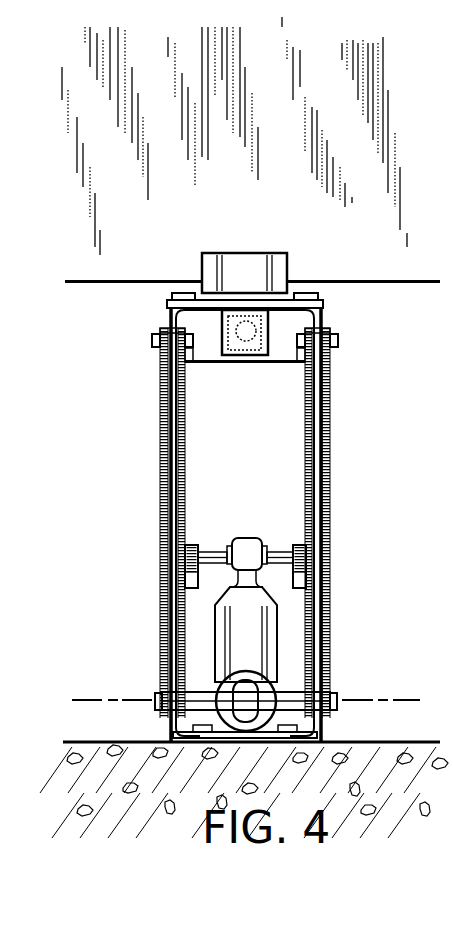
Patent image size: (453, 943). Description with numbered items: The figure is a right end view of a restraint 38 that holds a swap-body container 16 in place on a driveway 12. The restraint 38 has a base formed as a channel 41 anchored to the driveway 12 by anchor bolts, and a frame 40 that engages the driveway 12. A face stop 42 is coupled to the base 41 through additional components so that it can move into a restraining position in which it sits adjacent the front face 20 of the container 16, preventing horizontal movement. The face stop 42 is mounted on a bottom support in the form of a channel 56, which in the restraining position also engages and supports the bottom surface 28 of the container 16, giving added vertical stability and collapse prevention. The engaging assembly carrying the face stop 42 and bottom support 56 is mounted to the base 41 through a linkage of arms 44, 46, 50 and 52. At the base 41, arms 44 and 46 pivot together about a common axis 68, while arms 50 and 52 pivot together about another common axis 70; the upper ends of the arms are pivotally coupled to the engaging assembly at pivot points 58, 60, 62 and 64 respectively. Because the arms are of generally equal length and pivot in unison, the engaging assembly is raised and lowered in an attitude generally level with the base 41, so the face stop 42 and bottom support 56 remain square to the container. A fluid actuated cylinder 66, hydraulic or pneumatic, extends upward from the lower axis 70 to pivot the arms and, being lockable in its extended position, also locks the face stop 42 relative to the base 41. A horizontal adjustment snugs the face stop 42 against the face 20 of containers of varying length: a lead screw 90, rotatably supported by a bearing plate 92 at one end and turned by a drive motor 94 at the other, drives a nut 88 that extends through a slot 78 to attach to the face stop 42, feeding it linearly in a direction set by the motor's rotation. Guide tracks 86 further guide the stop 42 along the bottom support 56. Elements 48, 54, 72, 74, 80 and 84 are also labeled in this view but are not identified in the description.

The driveway 12 is at (139, 740).
The container 16 is at (385, 283).
The face 20 is at (264, 216).
The bottom surface 28 is at (94, 284).
The restraint 38 is at (96, 498).
The frame 40 is at (166, 585).
The channel 41 is at (322, 731).
The face stop 42 is at (255, 253).
The arm 44 is at (180, 410).
The arm 46 is at (306, 485).
The roller axis 48 is at (350, 698).
The arm 50 is at (158, 428).
The arm 52 is at (328, 442).
The axis line 54 is at (400, 698).
The bottom support 56 is at (324, 307).
The pivot point 58 is at (192, 350).
The pivot point 60 is at (295, 338).
The pivot point 62 is at (155, 343).
The pivot point 64 is at (340, 340).
The fluid actuated cylinder 66 is at (278, 622).
The common axis 68 is at (273, 547).
The common axis 70 is at (200, 692).
The left bearing 72 is at (192, 545).
The right bearing 74 is at (300, 545).
The slot 78 is at (242, 312).
The collar edge 80 is at (290, 292).
The deck hole 84 is at (172, 290).
The guide tracks 86 is at (178, 292).
The nut 88 is at (237, 357).
The lead screw 90 is at (230, 333).
The bearing plate 92 is at (300, 363).
The drive 94 is at (316, 318).